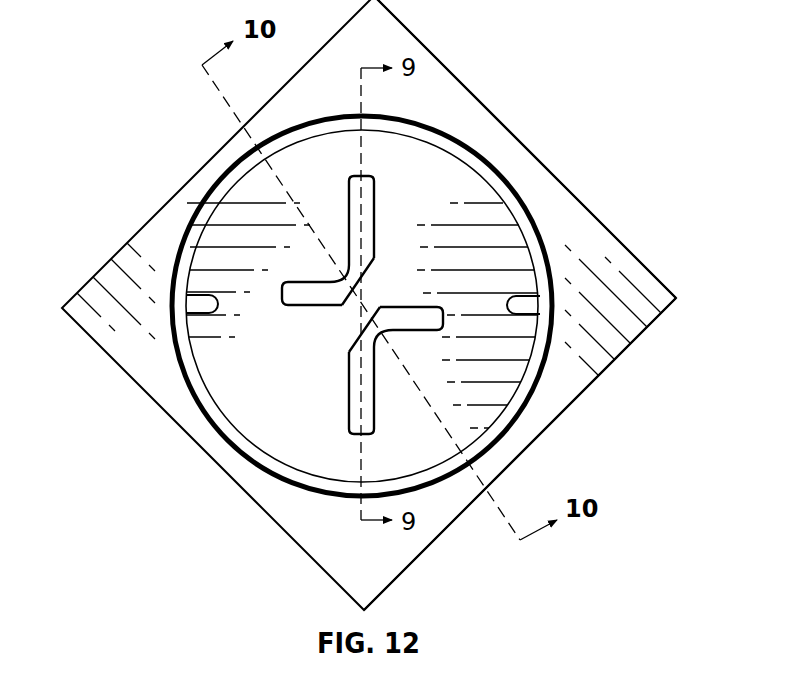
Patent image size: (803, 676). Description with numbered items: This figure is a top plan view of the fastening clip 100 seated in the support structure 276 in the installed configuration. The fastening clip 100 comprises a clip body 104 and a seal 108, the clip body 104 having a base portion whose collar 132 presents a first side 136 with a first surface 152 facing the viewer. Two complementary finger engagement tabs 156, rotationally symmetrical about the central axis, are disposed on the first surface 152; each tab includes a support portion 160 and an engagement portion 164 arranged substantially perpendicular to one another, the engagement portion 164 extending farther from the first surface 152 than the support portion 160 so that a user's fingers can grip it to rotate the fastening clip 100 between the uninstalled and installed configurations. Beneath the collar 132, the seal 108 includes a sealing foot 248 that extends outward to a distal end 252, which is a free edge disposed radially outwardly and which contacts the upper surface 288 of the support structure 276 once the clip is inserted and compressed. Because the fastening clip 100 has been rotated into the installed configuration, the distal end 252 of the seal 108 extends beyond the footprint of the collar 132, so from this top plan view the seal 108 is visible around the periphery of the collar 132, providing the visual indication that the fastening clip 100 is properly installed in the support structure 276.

The fastening clip 100 is at (106, 98).
The clip body 104 is at (224, 391).
The seal 108 is at (541, 222).
The collar 132 is at (200, 358).
The first side 136 is at (212, 260).
The first surface 152 is at (252, 428).
The finger engagement tabs 156 is at (361, 192).
The support portion 160 is at (310, 297).
The engagement portion 164 is at (363, 185).
The sealing foot 248 is at (515, 183).
The distal end 252 is at (490, 158).
The support structure 276 is at (631, 303).
The upper surface 288 is at (613, 348).